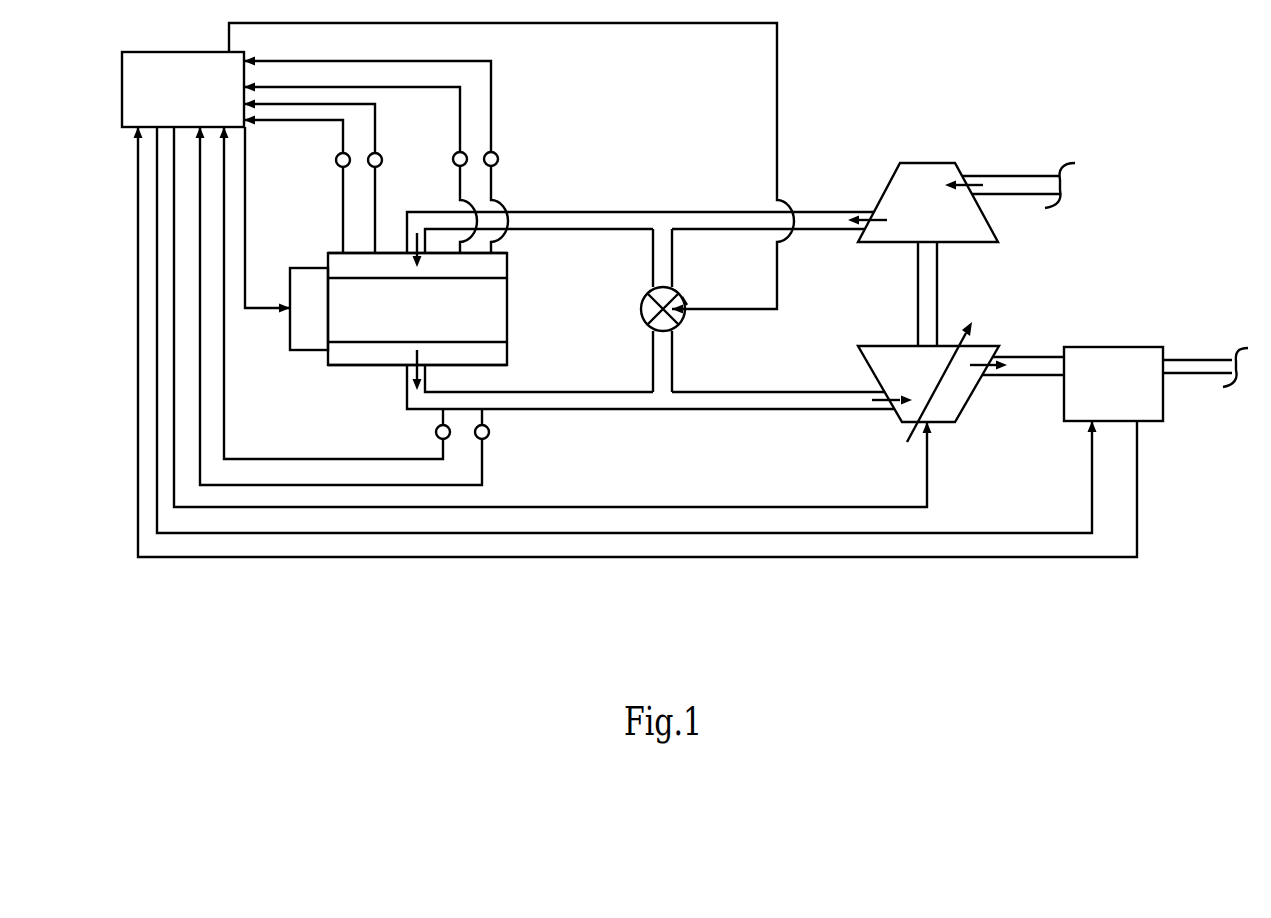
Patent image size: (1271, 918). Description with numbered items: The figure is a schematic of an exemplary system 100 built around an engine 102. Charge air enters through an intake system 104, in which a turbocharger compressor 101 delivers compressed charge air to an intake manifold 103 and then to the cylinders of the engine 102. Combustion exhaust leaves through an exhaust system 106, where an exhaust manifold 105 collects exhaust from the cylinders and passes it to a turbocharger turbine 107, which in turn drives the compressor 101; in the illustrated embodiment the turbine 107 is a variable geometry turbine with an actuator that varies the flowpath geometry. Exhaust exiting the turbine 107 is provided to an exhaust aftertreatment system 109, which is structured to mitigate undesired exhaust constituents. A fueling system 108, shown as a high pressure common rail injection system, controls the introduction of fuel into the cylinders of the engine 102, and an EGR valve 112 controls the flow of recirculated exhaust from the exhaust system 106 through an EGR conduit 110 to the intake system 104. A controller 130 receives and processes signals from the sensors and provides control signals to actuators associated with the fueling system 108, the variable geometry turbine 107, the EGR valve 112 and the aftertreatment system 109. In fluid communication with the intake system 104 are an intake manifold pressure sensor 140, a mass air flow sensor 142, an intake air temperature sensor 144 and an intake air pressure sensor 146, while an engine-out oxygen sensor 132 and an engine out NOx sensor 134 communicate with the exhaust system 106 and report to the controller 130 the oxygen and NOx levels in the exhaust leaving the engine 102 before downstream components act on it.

The system 100 is at (824, 45).
The turbocharger compressor 101 is at (955, 163).
The engine 102 is at (403, 319).
The intake manifold 103 is at (509, 260).
The intake system 104 is at (827, 202).
The exhaust manifold 105 is at (509, 348).
The exhaust system 106 is at (818, 418).
The turbocharger turbine 107 is at (948, 422).
The fueling system 108 is at (310, 350).
The exhaust aftertreatment system 109 is at (1153, 421).
The EGR conduit 110 is at (676, 343).
The EGR valve 112 is at (685, 300).
The controller 130 is at (168, 99).
The engine-out oxygen sensor 132 is at (436, 432).
The engine out NOx sensor 134 is at (489, 432).
The intake manifold pressure (MAP) sensor 140 is at (339, 167).
The mass air flow sensor 142 is at (378, 167).
The intake air temperature sensor 144 is at (455, 154).
The intake air pressure sensor 146 is at (487, 154).